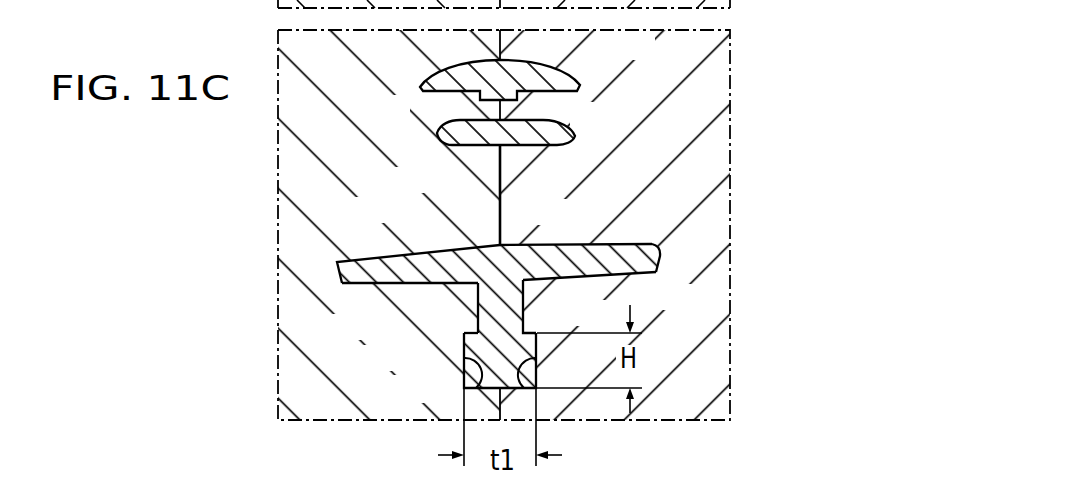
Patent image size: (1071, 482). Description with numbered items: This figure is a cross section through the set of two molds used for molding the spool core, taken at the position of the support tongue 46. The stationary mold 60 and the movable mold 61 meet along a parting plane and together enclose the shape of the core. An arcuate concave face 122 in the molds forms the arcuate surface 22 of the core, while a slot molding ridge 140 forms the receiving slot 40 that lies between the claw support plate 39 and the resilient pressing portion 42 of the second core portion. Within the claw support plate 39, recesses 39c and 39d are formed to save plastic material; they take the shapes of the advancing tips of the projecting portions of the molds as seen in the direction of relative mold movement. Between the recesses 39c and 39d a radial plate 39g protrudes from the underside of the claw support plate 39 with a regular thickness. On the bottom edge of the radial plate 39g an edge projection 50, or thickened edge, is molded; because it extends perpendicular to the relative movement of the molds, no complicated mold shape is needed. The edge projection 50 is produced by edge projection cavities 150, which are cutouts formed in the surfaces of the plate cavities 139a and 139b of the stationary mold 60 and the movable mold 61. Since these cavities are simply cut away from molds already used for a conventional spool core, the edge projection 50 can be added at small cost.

The arcuate surface 22 is at (444, 72).
The support tongue 46 is at (553, 68).
The resilient pressing portion 42 is at (450, 127).
The arcuate concave face 122 is at (533, 97).
The slot molding ridge 140 is at (500, 177).
The receiving slot 40 is at (443, 255).
The claw support plate 39 is at (667, 258).
The recess 39c is at (413, 285).
The plate cavity 139b is at (476, 289).
The radial plate 39g is at (468, 334).
The edge projection 50 is at (538, 332).
The plate cavity 139a is at (525, 302).
The recess 39d is at (580, 281).
The edge projection cavity 150 is at (470, 388).
The stationary mold 60 is at (267, 337).
The movable mold 61 is at (743, 147).